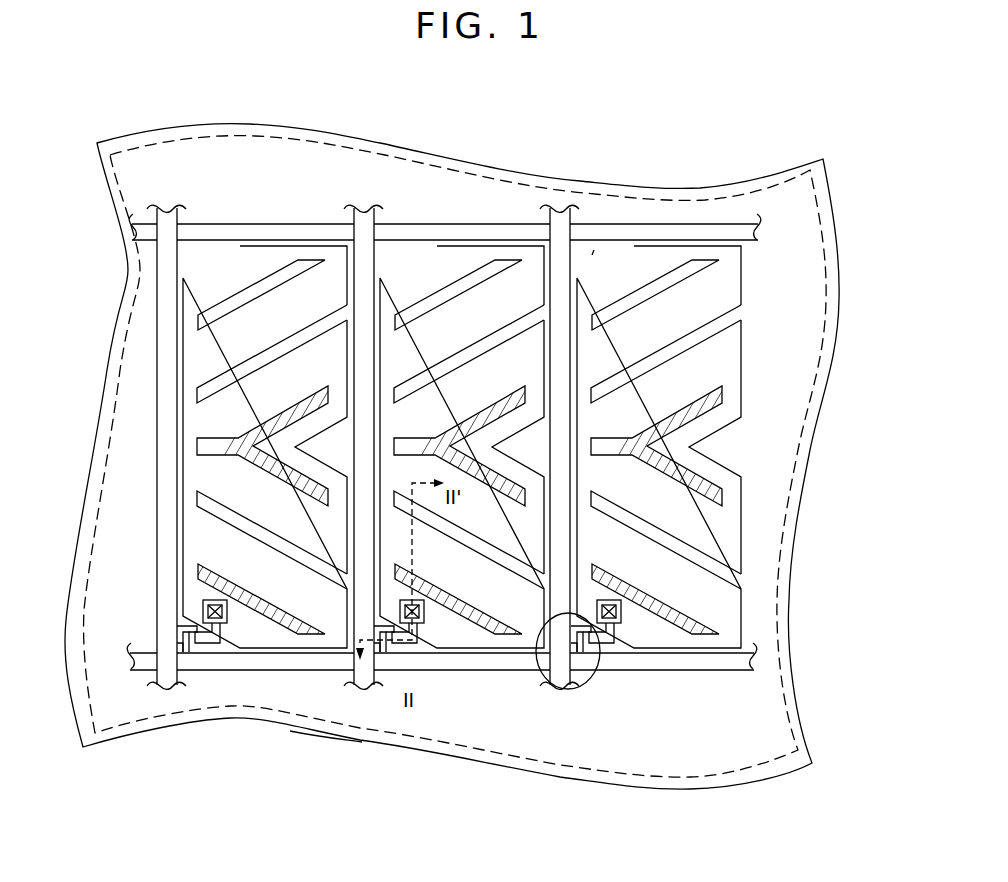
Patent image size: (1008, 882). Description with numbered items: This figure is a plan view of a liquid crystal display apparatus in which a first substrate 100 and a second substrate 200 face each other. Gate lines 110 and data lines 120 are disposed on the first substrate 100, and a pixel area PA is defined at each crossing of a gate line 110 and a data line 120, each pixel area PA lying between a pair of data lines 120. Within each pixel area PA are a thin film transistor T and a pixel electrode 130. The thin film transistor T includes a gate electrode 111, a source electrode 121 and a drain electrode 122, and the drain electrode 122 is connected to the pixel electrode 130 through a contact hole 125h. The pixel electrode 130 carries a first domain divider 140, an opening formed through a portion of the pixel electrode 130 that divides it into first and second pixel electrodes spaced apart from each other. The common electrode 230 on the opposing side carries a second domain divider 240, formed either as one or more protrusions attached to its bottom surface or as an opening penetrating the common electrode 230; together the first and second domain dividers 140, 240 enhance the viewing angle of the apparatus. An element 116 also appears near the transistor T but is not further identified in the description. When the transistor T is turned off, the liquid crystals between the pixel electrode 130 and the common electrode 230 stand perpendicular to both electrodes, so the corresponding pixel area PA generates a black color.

The first substrate 100 is at (360, 731).
The second substrate 200 is at (308, 733).
The common electrode 230 is at (225, 722).
The gate line 110 is at (717, 233).
The data line 120 is at (167, 686).
The pixel electrode 130 is at (741, 263).
The first domain divider 140 is at (730, 313).
The second domain divider 240 is at (655, 285).
The pixel area PA is at (592, 255).
The contact hole 125h is at (621, 608).
The thin film transistor T is at (622, 638).
The gate electrode 111 is at (577, 652).
The semiconductor layer 116 is at (567, 620).
The source electrode 121 is at (571, 643).
The drain electrode 122 is at (610, 645).